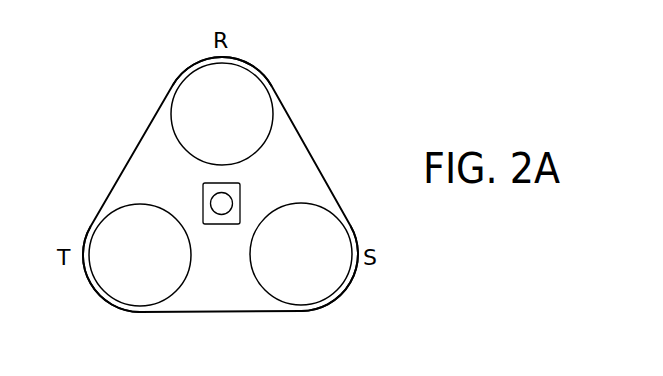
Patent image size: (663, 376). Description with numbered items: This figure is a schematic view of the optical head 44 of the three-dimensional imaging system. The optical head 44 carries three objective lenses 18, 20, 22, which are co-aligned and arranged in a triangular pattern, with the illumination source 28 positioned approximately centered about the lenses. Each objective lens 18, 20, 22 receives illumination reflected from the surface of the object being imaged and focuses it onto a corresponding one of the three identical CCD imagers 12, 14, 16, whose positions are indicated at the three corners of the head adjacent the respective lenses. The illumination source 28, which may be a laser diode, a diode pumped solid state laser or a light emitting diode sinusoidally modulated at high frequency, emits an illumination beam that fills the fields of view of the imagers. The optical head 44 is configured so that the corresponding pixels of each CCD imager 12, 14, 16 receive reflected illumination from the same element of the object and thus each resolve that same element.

The optical head 44 is at (138, 72).
The CCD imager 12 is at (250, 63).
The CCD imager 14 is at (351, 282).
The CCD imager 16 is at (99, 293).
The objective lens 18 is at (238, 123).
The objective lens 20 is at (323, 268).
The objective lens 22 is at (158, 268).
The illumination source 28 is at (240, 196).